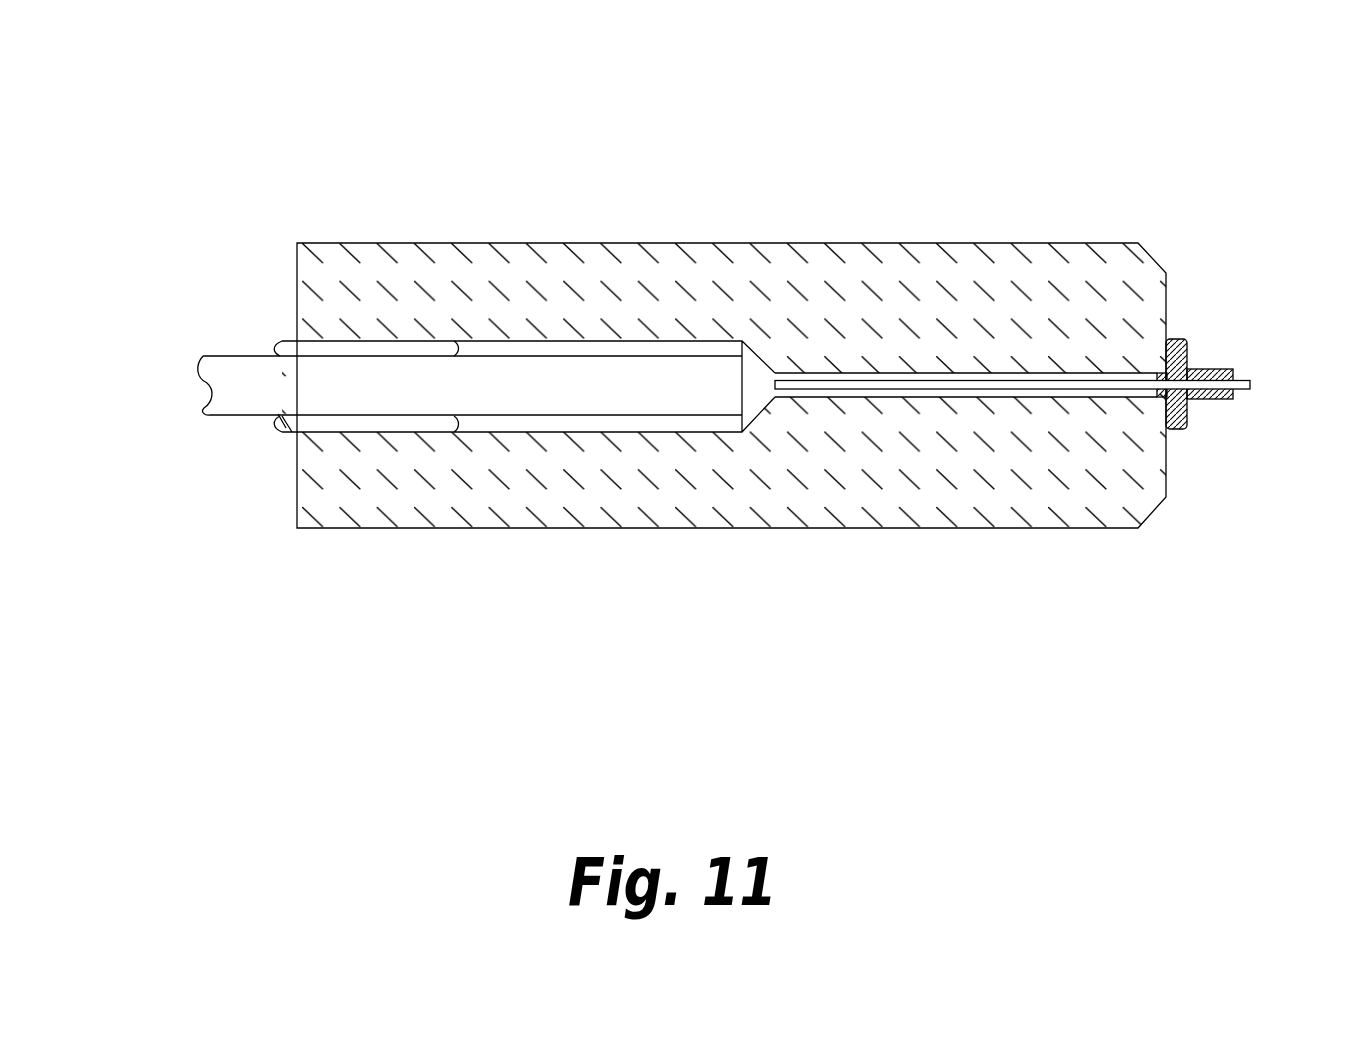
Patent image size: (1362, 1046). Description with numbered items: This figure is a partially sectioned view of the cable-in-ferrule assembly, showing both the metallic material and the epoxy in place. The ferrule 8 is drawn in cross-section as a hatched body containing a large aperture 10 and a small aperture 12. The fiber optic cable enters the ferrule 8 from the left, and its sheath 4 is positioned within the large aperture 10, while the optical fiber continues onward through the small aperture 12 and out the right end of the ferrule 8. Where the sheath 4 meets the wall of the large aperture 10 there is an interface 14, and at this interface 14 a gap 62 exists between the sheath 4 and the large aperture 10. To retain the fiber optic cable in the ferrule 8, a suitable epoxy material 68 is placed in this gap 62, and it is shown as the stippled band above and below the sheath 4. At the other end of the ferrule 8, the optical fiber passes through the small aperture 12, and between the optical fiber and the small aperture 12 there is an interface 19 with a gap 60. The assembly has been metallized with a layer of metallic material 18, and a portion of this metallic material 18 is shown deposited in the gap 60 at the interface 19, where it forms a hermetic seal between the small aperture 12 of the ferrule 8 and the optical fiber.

The sheath 4 is at (230, 355).
The ferrule 8 is at (483, 243).
The large aperture 10 is at (652, 350).
The small aperture 12 is at (1027, 373).
The interface 14 is at (285, 422).
The metallic material 18 is at (1187, 352).
The interface 19 is at (1187, 395).
The gap 60 is at (1117, 393).
The gap 62 is at (297, 430).
The epoxy material 68 is at (293, 340).